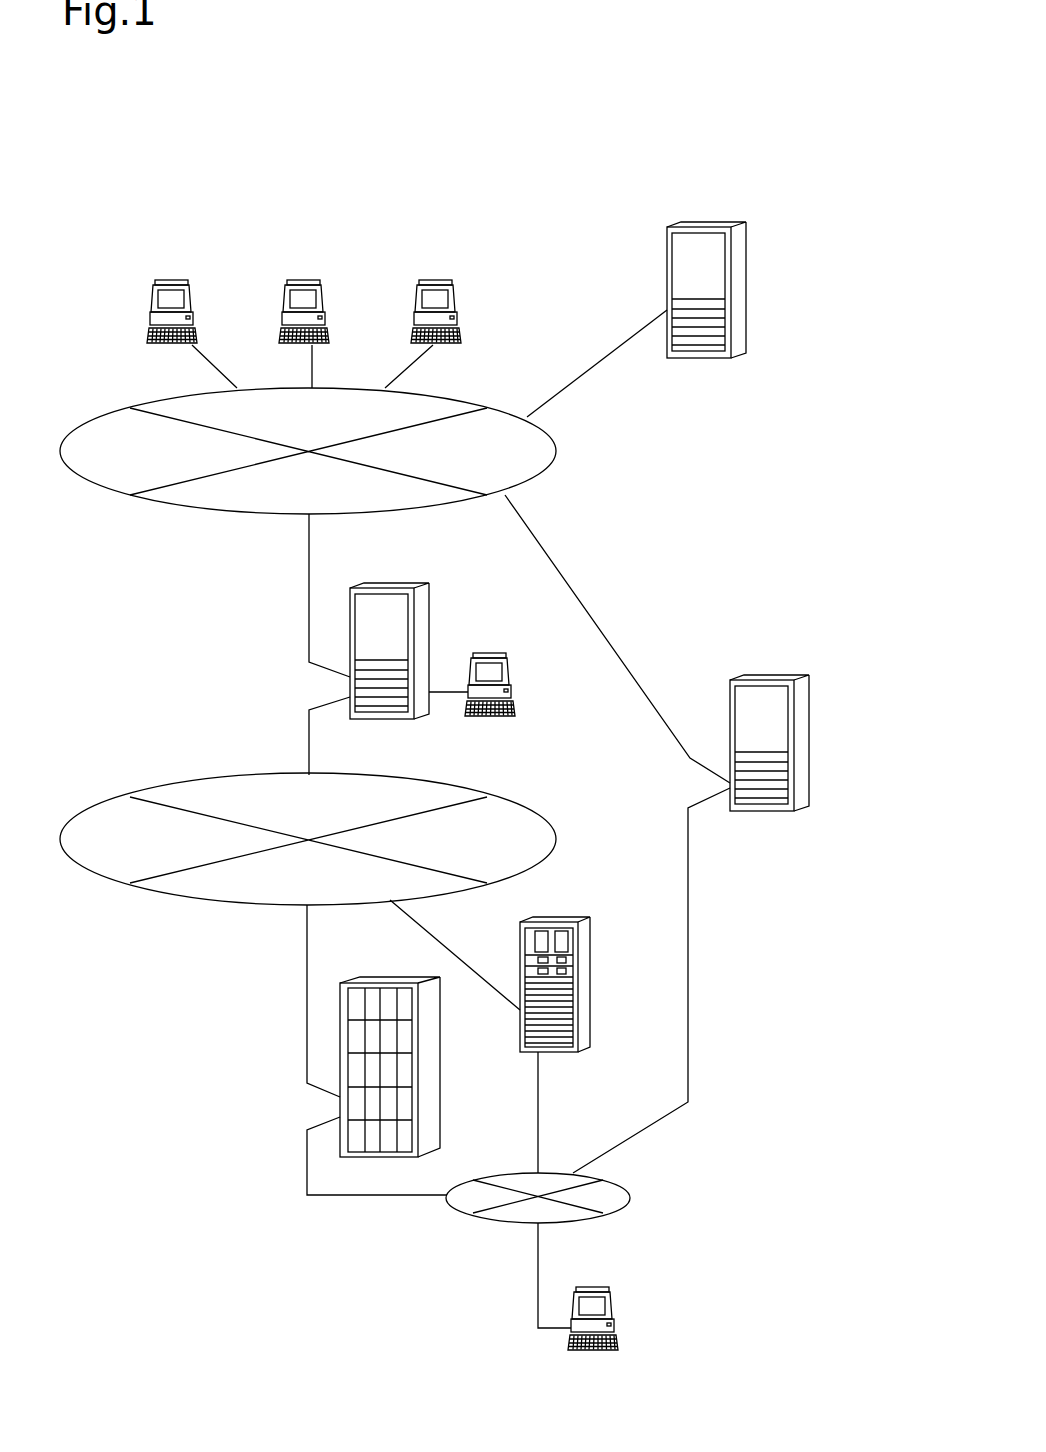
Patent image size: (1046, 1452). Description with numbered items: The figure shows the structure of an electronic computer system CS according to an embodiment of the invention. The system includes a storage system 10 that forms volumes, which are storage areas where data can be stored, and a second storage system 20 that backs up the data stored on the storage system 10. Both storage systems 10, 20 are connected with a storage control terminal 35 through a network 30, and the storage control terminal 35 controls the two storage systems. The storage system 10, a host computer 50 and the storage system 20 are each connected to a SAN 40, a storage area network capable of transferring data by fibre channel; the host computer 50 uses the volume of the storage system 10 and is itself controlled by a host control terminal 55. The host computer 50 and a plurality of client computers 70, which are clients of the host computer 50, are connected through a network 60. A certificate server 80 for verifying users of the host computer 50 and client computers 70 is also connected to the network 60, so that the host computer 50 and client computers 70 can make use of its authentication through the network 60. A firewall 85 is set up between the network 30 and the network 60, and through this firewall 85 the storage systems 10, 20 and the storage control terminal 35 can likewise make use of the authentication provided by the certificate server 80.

The electronic computer system CS is at (621, 154).
The storage system 10 is at (441, 1085).
The storage system 20 is at (590, 985).
The network 30 is at (632, 1198).
The storage control terminal 35 is at (590, 1288).
The SAN (Storage Area Network) 40 is at (108, 796).
The host computer 50 is at (433, 628).
The host control terminal 55 is at (490, 652).
The network 60 is at (108, 408).
The client computers 70 is at (165, 280).
The certificate server 80 is at (748, 285).
The firewall 85 is at (812, 740).